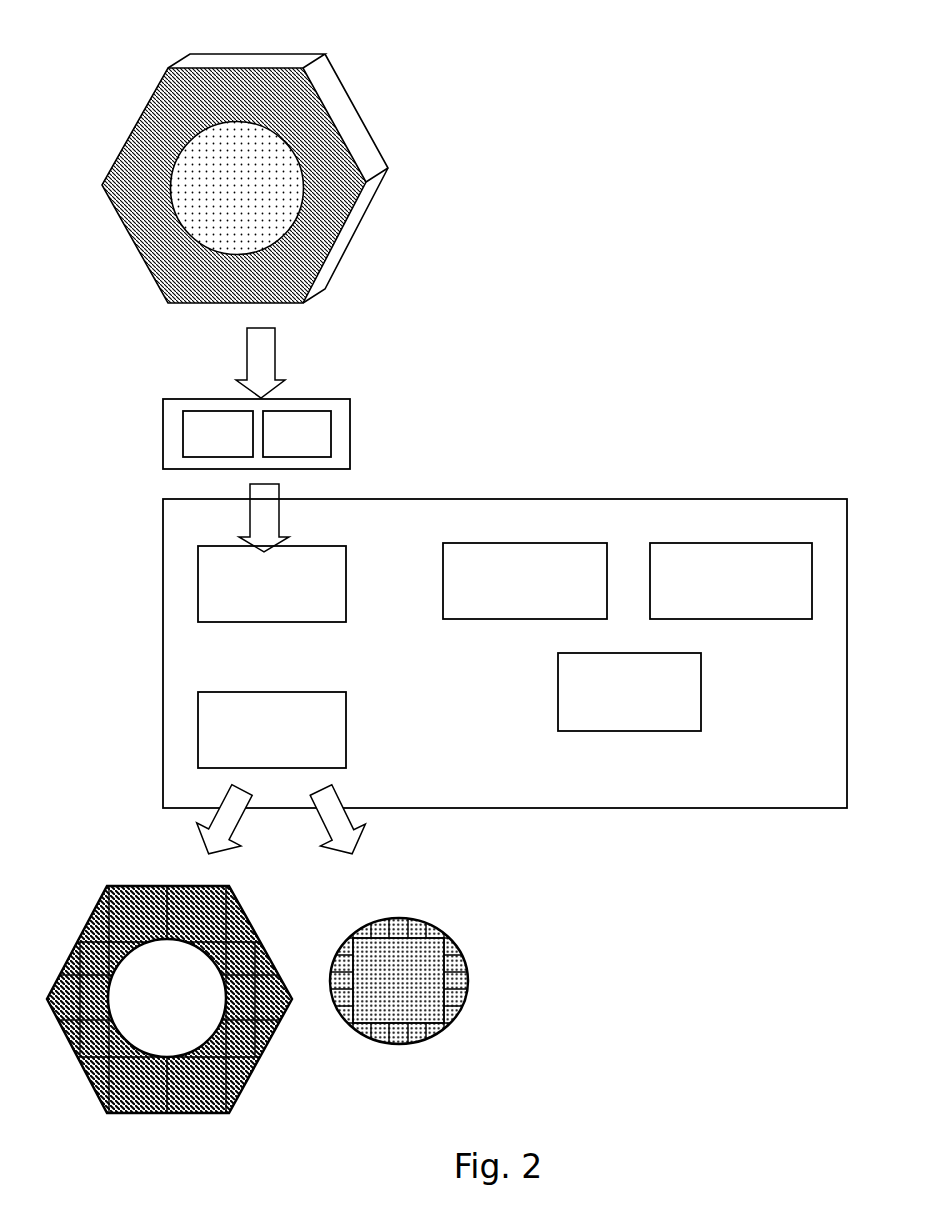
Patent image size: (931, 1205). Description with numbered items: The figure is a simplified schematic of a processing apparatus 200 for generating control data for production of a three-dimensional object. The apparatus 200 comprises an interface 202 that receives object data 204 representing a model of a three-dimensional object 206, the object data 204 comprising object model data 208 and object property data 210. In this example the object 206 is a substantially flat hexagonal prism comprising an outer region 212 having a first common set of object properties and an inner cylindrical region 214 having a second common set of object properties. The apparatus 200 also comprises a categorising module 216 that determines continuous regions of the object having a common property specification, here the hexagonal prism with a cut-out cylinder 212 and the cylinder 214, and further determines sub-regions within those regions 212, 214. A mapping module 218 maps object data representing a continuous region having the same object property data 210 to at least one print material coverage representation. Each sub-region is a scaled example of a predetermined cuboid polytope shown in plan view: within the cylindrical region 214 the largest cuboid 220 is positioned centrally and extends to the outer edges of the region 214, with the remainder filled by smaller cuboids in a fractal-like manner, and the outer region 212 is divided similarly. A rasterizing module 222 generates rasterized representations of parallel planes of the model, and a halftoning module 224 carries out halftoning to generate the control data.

The processing apparatus 200 is at (505, 653).
The interface 202 is at (257, 575).
The object data 204 is at (235, 434).
The three-dimensional object 206 is at (387, 95).
The object model data 208 is at (204, 439).
The object property data 210 is at (283, 439).
The outer region 212 is at (262, 281).
The inner cylindrical region 214 is at (223, 199).
The categorising module 216 is at (257, 720).
The mapping module 218 is at (511, 572).
The largest cuboid 220 is at (385, 984).
The rasterizing module 222 is at (716, 572).
The halftoning module 224 is at (616, 682).